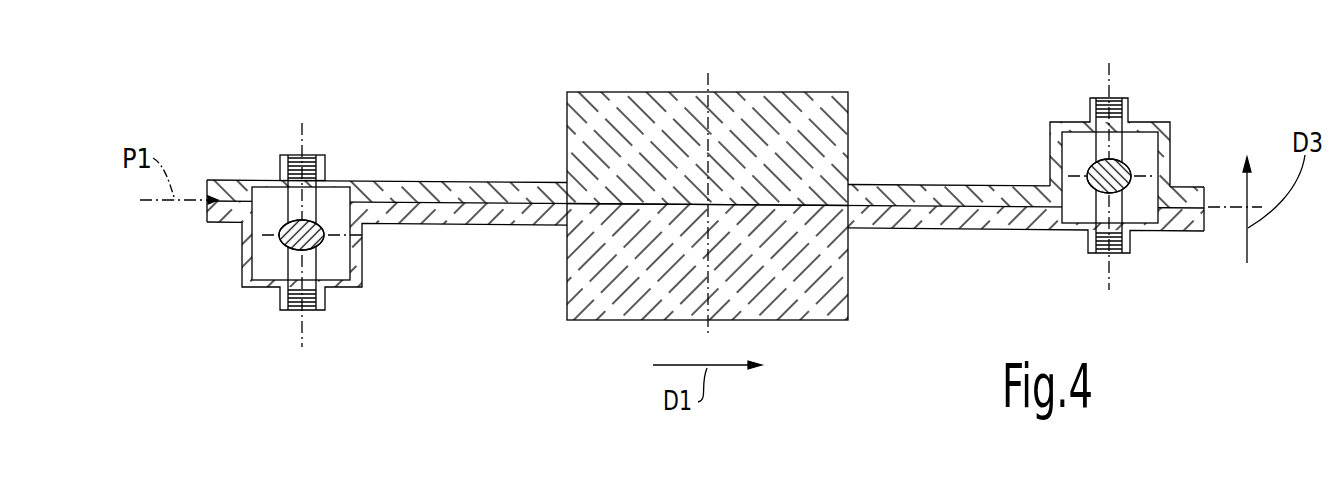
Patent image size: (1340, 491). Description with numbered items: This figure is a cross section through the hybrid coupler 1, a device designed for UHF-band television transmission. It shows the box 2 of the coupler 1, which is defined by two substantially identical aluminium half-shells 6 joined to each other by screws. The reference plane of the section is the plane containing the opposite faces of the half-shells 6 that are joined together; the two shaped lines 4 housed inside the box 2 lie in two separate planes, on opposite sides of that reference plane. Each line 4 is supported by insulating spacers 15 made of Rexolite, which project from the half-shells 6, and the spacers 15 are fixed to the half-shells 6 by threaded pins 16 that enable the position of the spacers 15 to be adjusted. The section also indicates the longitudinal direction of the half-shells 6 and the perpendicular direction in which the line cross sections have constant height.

The hybrid coupler 1 is at (1145, 55).
The box 2 is at (502, 88).
The shaped line 4 is at (278, 241).
The half-shell 6 is at (823, 120).
The insulating spacer 15 is at (295, 205).
The threaded pin 16 is at (305, 163).